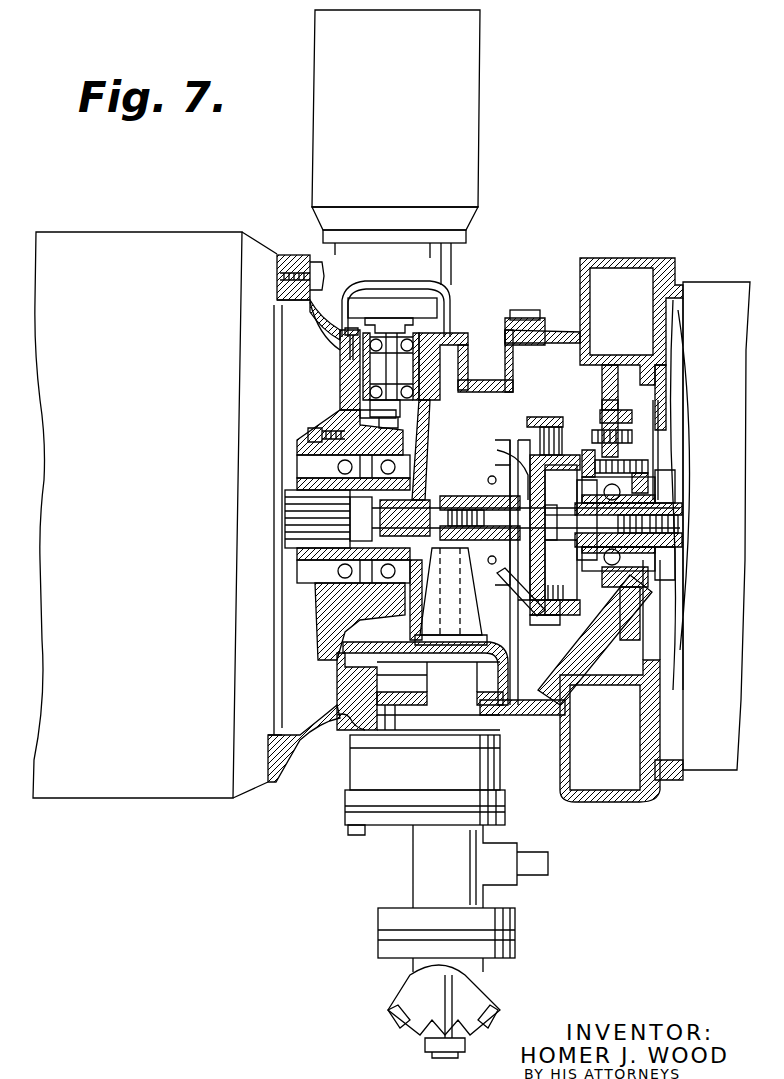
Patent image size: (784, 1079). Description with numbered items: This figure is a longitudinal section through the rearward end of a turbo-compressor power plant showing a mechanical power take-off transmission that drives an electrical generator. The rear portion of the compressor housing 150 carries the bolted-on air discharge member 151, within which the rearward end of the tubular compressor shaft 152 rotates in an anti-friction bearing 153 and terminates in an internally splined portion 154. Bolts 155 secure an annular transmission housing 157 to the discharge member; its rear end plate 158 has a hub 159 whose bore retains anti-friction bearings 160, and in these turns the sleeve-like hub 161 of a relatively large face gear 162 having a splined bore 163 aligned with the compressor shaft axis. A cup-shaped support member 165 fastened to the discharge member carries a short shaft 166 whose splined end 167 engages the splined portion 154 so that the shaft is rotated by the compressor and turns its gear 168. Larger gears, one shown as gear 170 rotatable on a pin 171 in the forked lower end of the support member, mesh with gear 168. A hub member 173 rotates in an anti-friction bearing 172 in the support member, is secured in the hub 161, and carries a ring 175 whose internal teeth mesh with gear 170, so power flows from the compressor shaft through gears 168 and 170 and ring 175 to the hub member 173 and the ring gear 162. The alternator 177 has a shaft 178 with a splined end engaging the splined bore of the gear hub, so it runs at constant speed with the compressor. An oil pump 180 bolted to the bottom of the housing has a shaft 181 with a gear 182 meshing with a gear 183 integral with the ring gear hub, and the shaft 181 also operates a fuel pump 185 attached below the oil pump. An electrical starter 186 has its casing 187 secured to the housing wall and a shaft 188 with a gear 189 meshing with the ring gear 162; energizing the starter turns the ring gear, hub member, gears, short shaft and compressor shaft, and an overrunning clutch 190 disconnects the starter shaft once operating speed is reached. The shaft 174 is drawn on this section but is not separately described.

The rear portion of the compressor housing 150 is at (712, 293).
The air discharge member 151 is at (628, 258).
The compressor shaft 152 is at (672, 505).
The anti-friction bearing 153 is at (634, 477).
The internally splined portion 154 is at (679, 523).
The bolts 155 is at (522, 318).
The transmission housing 157 is at (313, 732).
The rear end plate 158 is at (340, 386).
The hub 159 is at (414, 441).
The anti-friction bearings 160 is at (350, 432).
The sleeve-like hub 161 is at (310, 455).
The face gear 162 is at (412, 426).
The splined bore 163 is at (340, 543).
The support member 165 is at (568, 452).
The short shaft 166 is at (567, 605).
The splined end 167 is at (682, 540).
The gear 168 is at (540, 512).
The gear 170 is at (547, 620).
The pin 171 is at (470, 598).
The anti-friction bearing 172 is at (512, 480).
The hub member 173 is at (508, 463).
The shaft 174 is at (408, 496).
The ring 175 is at (543, 425).
The alternator 177 is at (226, 243).
The alternator shaft 178 is at (293, 516).
The oil pump 180 is at (460, 773).
The pump shaft 181 is at (442, 605).
The gear 182 is at (480, 503).
The gear 183 is at (452, 468).
The fuel pump 185 is at (418, 867).
The electrical starter 186 is at (500, 157).
The starter casing 187 is at (455, 262).
The starter shaft 188 is at (345, 371).
The starter gear 189 is at (417, 411).
The overrunning clutch 190 is at (430, 302).